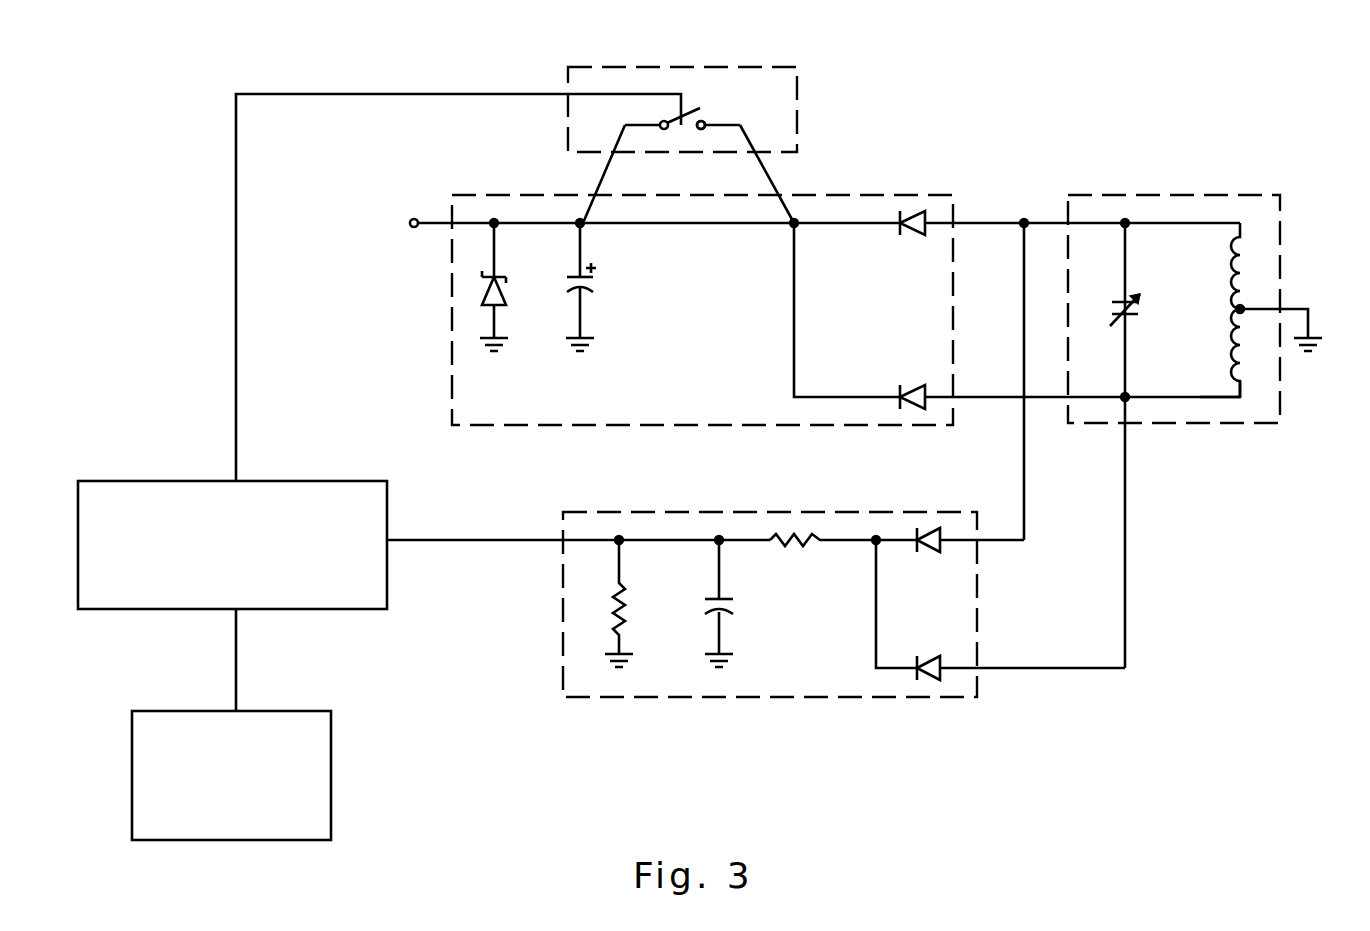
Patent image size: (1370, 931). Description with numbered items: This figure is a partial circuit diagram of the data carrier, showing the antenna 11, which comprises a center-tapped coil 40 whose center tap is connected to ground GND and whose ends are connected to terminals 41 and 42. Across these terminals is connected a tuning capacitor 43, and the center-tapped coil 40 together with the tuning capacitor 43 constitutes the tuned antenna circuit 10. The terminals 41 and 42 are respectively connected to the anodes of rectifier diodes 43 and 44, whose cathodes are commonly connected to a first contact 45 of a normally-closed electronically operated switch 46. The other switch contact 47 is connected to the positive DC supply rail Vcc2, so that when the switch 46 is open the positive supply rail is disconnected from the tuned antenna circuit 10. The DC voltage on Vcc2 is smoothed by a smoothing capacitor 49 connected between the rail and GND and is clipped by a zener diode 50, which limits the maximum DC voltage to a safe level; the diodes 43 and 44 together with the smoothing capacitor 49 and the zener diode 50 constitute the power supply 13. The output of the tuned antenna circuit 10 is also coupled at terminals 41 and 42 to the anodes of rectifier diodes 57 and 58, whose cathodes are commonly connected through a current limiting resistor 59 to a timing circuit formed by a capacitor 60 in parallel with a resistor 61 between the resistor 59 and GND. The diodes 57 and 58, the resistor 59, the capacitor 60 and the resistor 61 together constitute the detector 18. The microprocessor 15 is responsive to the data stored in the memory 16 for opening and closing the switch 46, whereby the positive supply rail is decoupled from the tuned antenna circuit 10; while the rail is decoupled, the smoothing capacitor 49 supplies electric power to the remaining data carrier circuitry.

The tuned antenna circuit 10 is at (1245, 195).
The antenna 11 is at (1244, 390).
The power supply 13 is at (720, 425).
The microprocessor 15 is at (387, 576).
The memory 16 is at (331, 743).
The detector 18 is at (775, 697).
The center-tapped coil 40 is at (1246, 256).
The terminal 41 is at (1127, 221).
The terminal 42 is at (1127, 399).
The tuning capacitor / rectifier diode 43 is at (926, 220).
The rectifier diode 44 is at (920, 400).
The first contact 45 is at (705, 123).
The normally-closed electronically operated switch 46 is at (680, 67).
The switch contact 47 is at (666, 130).
The smoothing capacitor 49 is at (594, 288).
The zener diode 50 is at (506, 295).
The rectifier diode 57 is at (930, 548).
The rectifier diode 58 is at (932, 678).
The current limiting resistor 59 is at (795, 548).
The capacitor 60 is at (728, 610).
The resistor 61 is at (621, 583).